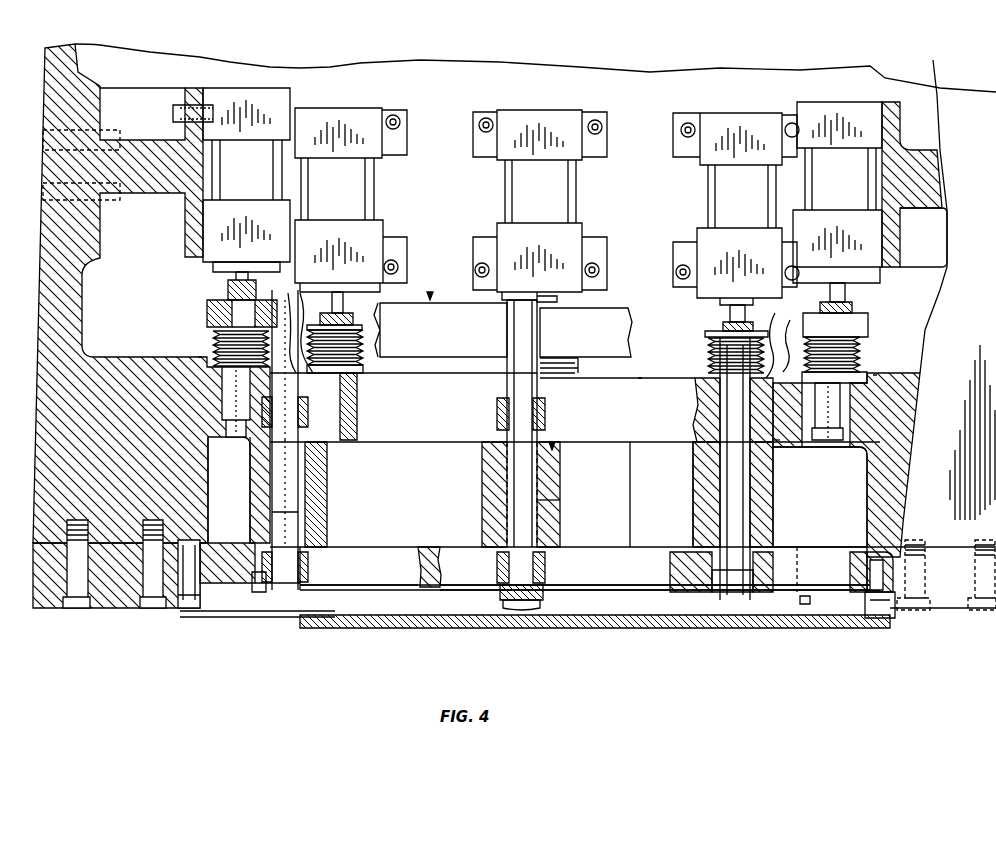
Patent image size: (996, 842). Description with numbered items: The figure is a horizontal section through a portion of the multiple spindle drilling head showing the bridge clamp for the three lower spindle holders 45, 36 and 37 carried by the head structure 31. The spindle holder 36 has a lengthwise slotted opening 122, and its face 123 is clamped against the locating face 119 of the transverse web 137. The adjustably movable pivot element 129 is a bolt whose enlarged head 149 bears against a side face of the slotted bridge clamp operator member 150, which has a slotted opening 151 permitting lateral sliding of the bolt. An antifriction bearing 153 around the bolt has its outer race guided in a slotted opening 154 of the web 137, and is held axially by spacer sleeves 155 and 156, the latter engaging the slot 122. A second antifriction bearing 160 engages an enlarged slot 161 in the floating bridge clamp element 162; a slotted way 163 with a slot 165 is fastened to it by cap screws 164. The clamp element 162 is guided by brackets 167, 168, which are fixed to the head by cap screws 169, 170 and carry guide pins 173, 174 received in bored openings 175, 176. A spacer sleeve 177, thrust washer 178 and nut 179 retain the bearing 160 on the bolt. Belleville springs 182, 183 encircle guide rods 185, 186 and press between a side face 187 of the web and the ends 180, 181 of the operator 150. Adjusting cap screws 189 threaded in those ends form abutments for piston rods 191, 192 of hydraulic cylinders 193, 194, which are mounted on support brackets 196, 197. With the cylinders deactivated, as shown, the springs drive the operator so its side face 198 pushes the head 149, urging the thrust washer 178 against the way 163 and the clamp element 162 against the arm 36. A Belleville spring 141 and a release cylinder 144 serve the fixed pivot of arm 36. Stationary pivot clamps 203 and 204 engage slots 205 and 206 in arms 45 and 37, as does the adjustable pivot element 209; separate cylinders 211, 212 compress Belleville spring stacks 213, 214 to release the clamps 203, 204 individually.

The head structure 31 is at (45, 424).
The spindle holder 36 is at (549, 502).
The spindle support arm 37 is at (763, 524).
The spindle support arm 45 is at (323, 499).
The locating face 119 is at (548, 452).
The slotted opening 122 is at (512, 462).
The face 123 is at (552, 443).
The adjustably movable pivot element 129 is at (505, 412).
The transverse web 137 is at (777, 442).
The Belleville spring 141 is at (576, 367).
The pivot clamp element release cylinder 144 is at (559, 112).
The enlarged head 149 is at (508, 297).
The bridge clamp operator member 150 is at (829, 305).
The slotted opening 151 is at (598, 312).
The antifriction bearing 153 is at (546, 414).
The slotted opening 154 is at (652, 433).
The spacer sleeve 155 is at (512, 336).
The spacer sleeve 156 is at (512, 508).
The antifriction bearing 160 is at (546, 570).
The enlarged slot 161 is at (466, 566).
The floating bridge clamp element 162 is at (242, 570).
The slotted way 163 is at (329, 591).
The cap screws 164 is at (800, 600).
The slot 165 is at (399, 591).
The bracket 167 is at (118, 608).
The bracket 168 is at (935, 625).
The cap screws 169 is at (152, 610).
The cap screws 170 is at (910, 640).
The guide pin 173 is at (181, 606).
The guide pin 174 is at (866, 602).
The bored opening 175 is at (197, 523).
The bored opening 176 is at (872, 566).
The spacer sleeve 177 is at (505, 590).
The thrust washer 178 is at (503, 600).
The nut 179 is at (536, 606).
The end 180 is at (212, 312).
The end 181 is at (862, 318).
The Belleville spring 182 is at (213, 345).
The Belleville spring 183 is at (868, 346).
The guide rod 185 is at (236, 392).
The guide rod 186 is at (829, 412).
The side face 187 is at (875, 372).
The adjusting cap screw 189 is at (227, 292).
The piston rod 191 is at (246, 276).
The piston rod 192 is at (871, 264).
The hydraulic cylinder 193 is at (214, 250).
The hydraulic cylinder 194 is at (882, 236).
The support bracket 196 is at (150, 117).
The support bracket 197 is at (926, 176).
The side face 198 is at (430, 293).
The stationary pivot clamp 203 is at (333, 429).
The stationary pivot clamp 204 is at (750, 470).
The slot 205 is at (293, 515).
The slot 206 is at (722, 490).
The laterally adjustable pivot clamp element 209 is at (287, 470).
The hydraulic cylinder 211 is at (332, 113).
The hydraulic cylinder 212 is at (716, 118).
The Belleville springs 213 is at (356, 308).
The Belleville springs 214 is at (704, 356).